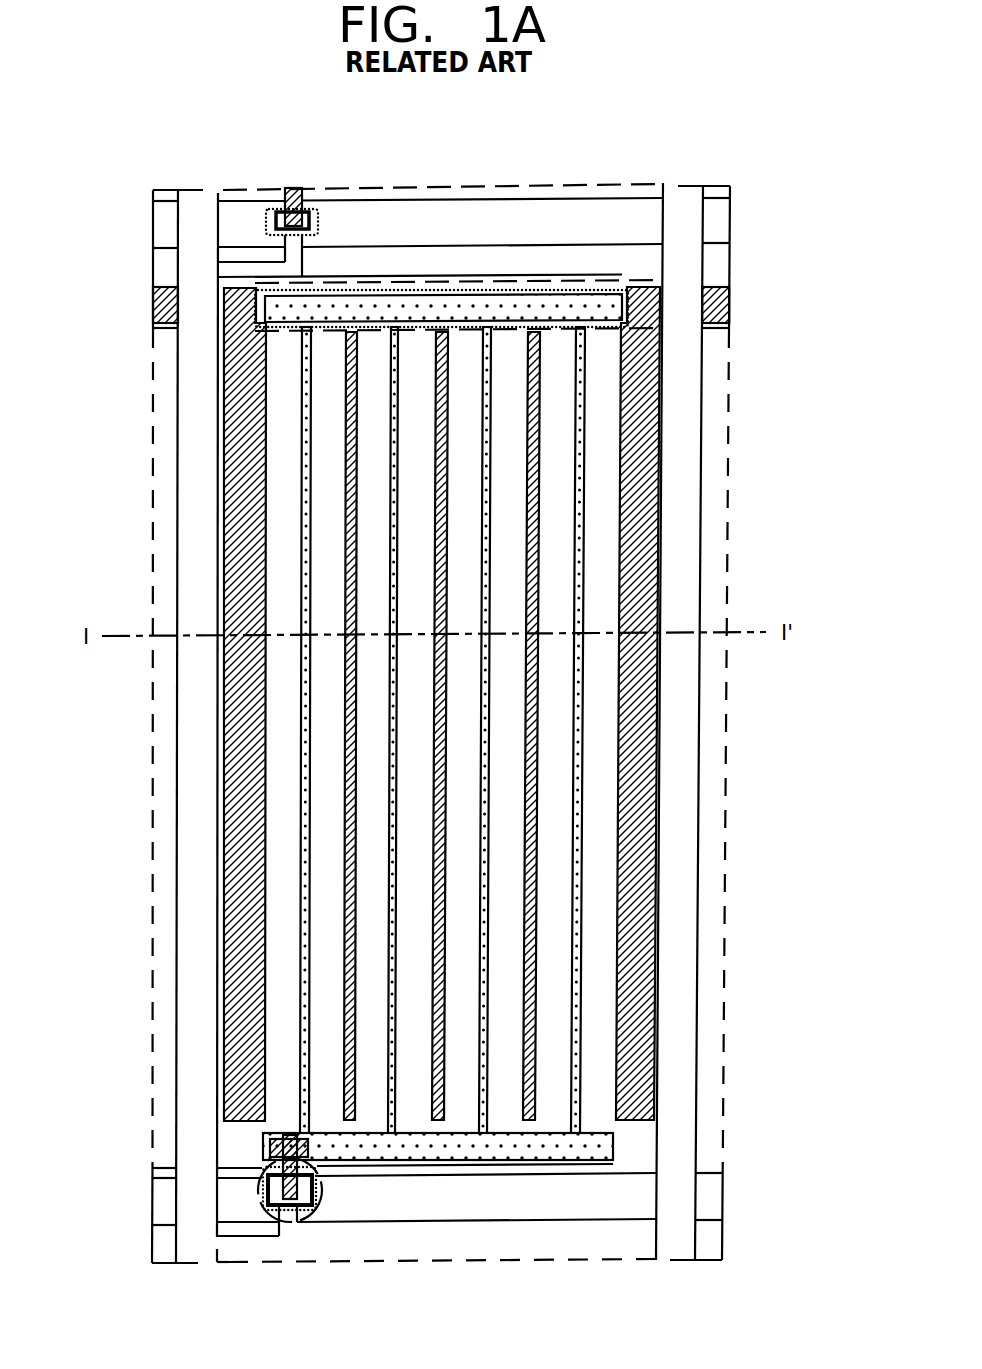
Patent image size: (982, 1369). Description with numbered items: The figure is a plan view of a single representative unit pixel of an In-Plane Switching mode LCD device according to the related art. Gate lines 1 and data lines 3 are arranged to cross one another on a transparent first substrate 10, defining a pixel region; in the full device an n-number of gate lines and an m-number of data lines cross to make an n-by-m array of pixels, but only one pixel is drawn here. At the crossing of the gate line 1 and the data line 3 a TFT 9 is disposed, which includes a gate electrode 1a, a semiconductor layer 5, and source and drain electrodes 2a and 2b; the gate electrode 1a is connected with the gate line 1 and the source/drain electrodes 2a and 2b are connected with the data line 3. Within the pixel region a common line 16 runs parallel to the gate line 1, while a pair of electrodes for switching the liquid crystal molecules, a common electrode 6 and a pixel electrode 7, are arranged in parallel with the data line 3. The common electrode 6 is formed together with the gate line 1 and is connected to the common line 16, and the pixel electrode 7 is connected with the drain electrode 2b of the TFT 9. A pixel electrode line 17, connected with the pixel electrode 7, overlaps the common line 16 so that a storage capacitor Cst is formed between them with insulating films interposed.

The gate line 1 is at (707, 1200).
The gate electrode 1a is at (272, 1215).
The source electrode 2a is at (293, 1215).
The drain electrode 2b is at (277, 1215).
The data line 3 is at (685, 773).
The semiconductor layer 5 is at (320, 1198).
The common electrode 6 is at (436, 366).
The pixel electrode 7 is at (396, 370).
The TFT 9 is at (240, 1188).
The first substrate 10 is at (732, 263).
The common line 16 is at (732, 305).
The pixel electrode line 17 is at (535, 290).
The storage capacitor Cst is at (470, 290).